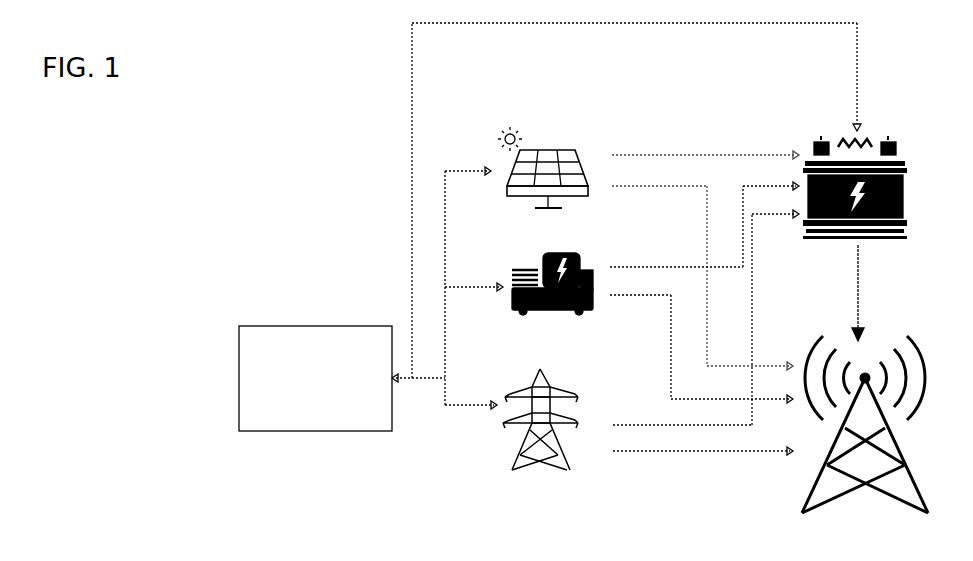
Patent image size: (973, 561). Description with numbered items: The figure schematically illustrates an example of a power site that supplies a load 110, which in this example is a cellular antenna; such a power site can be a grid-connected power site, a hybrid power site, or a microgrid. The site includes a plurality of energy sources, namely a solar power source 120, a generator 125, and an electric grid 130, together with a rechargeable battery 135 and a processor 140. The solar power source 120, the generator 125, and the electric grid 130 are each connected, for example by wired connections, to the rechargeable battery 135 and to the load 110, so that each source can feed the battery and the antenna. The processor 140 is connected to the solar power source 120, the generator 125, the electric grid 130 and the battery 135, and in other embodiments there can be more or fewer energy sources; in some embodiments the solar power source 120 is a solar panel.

The load 110 is at (912, 473).
The solar power source 120 is at (557, 146).
The generator 125 is at (581, 246).
The electric grid 130 is at (561, 385).
The rechargeable battery 135 is at (901, 172).
The processor 140 is at (288, 411).